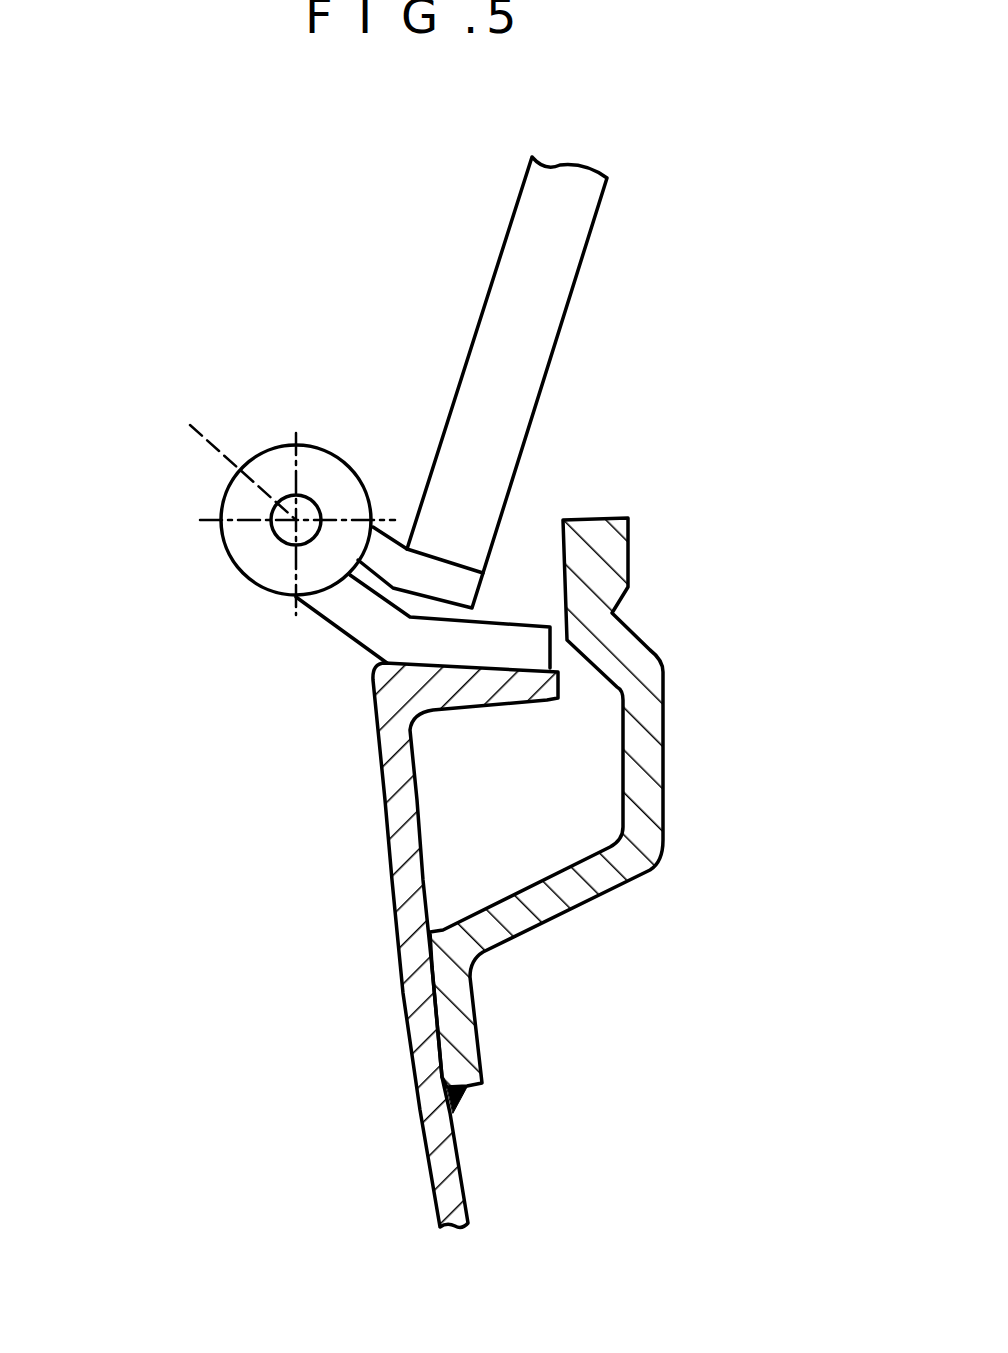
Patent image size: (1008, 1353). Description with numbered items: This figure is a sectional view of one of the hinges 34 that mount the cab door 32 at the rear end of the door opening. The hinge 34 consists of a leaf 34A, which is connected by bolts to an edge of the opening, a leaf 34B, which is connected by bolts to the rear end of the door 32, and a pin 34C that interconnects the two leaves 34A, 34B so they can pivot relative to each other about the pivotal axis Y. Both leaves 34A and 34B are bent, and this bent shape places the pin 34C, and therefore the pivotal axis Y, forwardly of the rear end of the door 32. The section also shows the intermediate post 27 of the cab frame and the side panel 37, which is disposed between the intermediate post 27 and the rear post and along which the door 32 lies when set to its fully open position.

The intermediate post 27 is at (655, 720).
The door 32 is at (503, 298).
The hinge 34 is at (393, 572).
The leaf 34A is at (360, 637).
The leaf 34B is at (476, 582).
The pin 34C is at (287, 533).
The side panel 37 is at (397, 880).
The pivotal axis Y is at (225, 447).